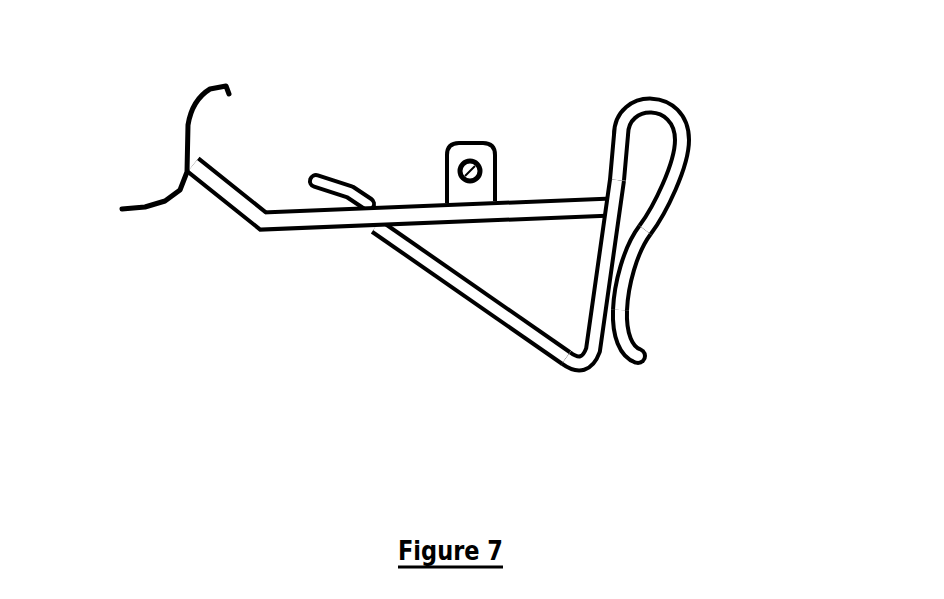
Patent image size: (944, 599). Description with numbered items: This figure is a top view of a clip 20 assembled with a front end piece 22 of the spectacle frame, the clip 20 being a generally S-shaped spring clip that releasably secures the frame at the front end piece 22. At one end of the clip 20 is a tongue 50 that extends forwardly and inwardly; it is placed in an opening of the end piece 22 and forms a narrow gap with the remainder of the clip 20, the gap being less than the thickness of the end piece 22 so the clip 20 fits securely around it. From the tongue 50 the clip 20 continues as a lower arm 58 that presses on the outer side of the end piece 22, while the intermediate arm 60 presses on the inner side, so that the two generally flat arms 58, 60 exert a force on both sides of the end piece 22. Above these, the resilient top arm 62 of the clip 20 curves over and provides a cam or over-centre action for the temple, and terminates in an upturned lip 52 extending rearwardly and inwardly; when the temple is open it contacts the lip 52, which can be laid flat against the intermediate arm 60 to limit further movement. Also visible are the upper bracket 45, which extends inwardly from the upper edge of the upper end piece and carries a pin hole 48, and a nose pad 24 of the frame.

The clip 20 is at (658, 92).
The front end piece 22 is at (232, 220).
The nose pad 24 is at (687, 123).
The upper bracket 45 is at (483, 142).
The pin hole 48 is at (493, 145).
The tongue 50 is at (372, 205).
The upturned lip 52 is at (650, 348).
The lower arm 58 is at (457, 295).
The intermediate arm 60 is at (592, 269).
The top arm 62 is at (660, 228).